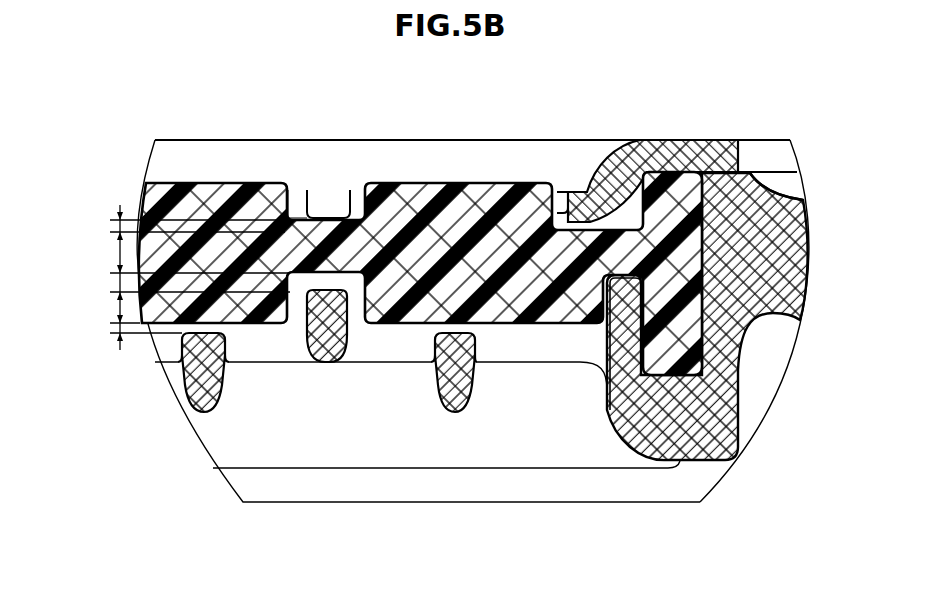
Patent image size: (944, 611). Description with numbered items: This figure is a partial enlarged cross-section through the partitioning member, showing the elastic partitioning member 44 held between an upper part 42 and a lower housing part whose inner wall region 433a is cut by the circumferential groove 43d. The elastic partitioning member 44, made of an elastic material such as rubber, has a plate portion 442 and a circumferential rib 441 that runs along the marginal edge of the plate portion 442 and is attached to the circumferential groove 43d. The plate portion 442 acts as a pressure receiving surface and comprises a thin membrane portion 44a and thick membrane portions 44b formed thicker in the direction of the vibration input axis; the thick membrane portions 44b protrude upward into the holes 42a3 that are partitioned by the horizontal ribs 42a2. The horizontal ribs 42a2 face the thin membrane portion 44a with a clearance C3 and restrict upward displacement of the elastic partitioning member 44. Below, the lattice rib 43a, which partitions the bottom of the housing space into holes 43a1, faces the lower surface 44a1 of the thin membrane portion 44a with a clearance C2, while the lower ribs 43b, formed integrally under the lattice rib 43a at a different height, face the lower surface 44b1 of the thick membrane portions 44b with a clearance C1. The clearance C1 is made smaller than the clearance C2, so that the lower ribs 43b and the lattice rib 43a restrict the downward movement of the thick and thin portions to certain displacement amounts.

The elastic partitioning member 44 is at (214, 174).
The circumferential rib 441 is at (690, 195).
The plate portion 442 is at (600, 185).
The thin membrane portion 44a is at (330, 222).
The lower surface of the thin membrane portion 44a1 is at (345, 280).
The thick membrane portion 44b is at (478, 174).
The lower surface of the thick membrane portion 44b1 is at (235, 325).
The upper partitioning member 42 is at (724, 139).
The horizontal rib 42a2 is at (331, 220).
The hole 42a3 is at (298, 190).
The lattice rib 43a is at (327, 310).
The hole 43a1 is at (312, 292).
The lower rib 43b is at (203, 410).
The circumferential groove 43d is at (645, 352).
The support wall 433a is at (683, 316).
The clearance C1 is at (117, 328).
The clearance C2 is at (113, 283).
The clearance C3 is at (113, 227).